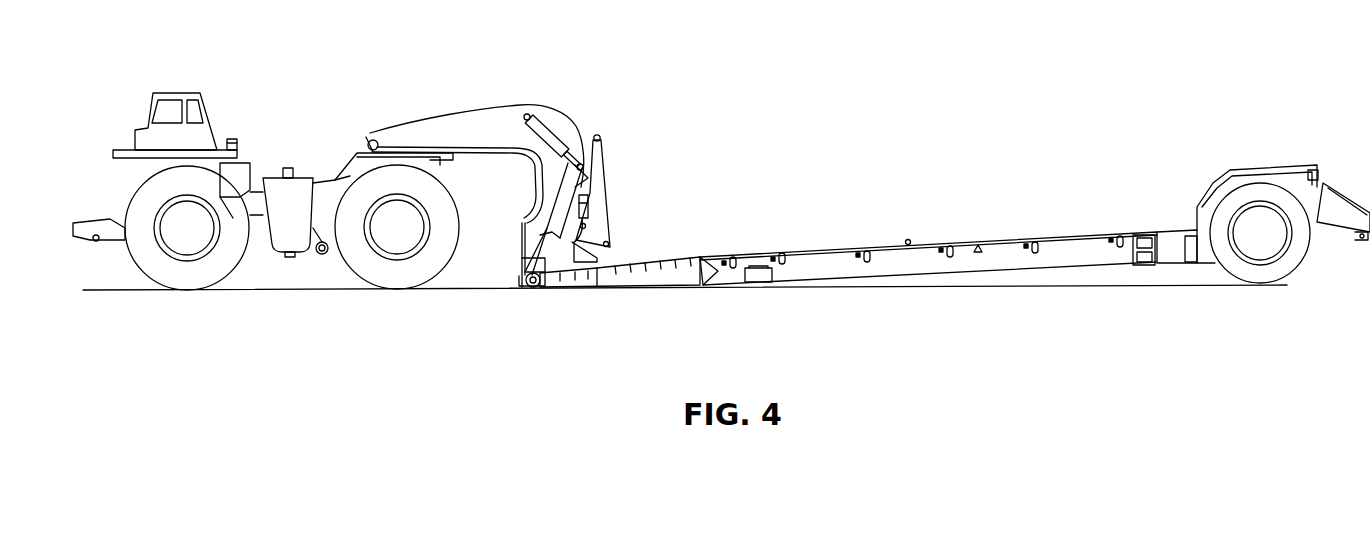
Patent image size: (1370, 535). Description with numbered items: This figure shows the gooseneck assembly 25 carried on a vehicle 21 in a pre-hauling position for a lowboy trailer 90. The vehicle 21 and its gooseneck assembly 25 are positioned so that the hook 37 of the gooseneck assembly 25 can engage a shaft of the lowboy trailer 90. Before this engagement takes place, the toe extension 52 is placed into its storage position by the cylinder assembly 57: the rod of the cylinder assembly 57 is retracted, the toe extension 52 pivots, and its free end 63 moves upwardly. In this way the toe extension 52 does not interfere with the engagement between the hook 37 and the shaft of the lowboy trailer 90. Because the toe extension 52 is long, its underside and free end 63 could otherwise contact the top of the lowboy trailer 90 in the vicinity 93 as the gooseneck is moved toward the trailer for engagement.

The vehicle 21 is at (301, 106).
The gooseneck assembly 25 is at (574, 103).
The free end 63 is at (600, 136).
The toe extension 52 is at (598, 181).
The cylinder assembly 57 is at (590, 204).
The hook 37 is at (533, 288).
The vicinity 93 is at (685, 245).
The lowboy trailer 90 is at (866, 206).